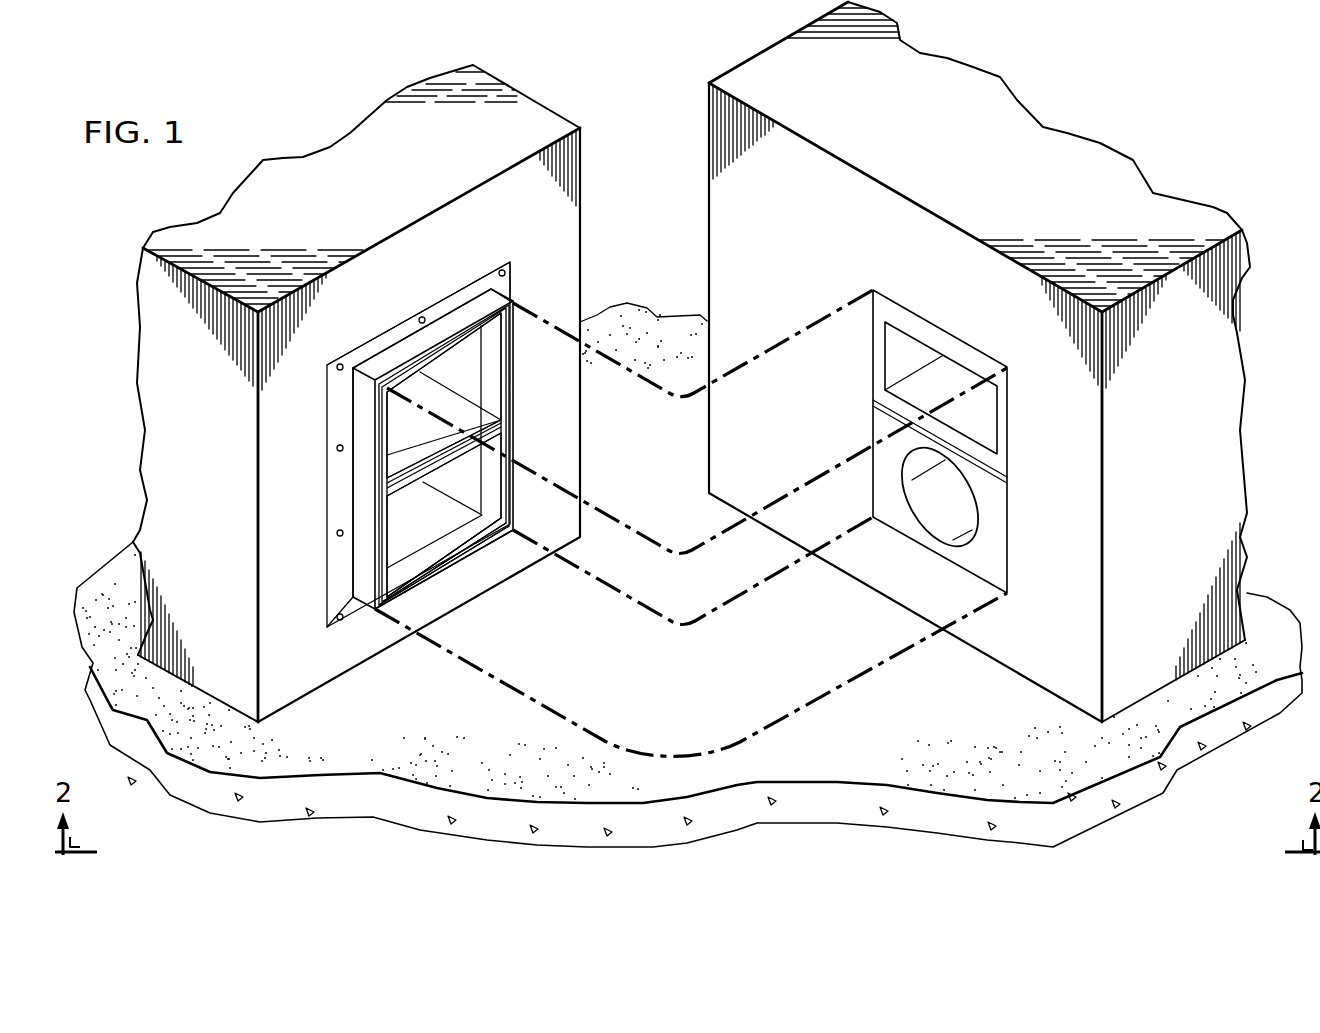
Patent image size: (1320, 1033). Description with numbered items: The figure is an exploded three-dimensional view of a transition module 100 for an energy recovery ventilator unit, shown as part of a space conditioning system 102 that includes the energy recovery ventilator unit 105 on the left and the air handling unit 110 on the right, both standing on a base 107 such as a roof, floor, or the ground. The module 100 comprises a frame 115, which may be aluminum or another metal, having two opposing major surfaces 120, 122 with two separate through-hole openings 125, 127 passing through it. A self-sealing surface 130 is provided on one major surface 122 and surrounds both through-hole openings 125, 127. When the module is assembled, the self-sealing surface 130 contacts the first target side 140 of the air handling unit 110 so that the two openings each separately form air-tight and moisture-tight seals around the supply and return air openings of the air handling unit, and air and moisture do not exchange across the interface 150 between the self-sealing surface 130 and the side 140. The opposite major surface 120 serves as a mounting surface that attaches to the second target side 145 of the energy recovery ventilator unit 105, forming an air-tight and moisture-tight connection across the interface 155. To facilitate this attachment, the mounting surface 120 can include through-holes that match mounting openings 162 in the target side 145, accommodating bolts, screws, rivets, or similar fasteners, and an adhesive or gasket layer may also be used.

The transition module 100 is at (380, 420).
The space conditioning system 102 is at (1160, 95).
The energy recovery ventilator unit 105 is at (356, 393).
The base 107 is at (103, 577).
The air handling unit 110 is at (979, 365).
The frame 115 is at (363, 408).
The major surface 120 is at (360, 414).
The major surface 122 is at (427, 583).
The through-hole opening 125 is at (464, 376).
The through-hole opening 127 is at (427, 525).
The self-sealing surface 130 is at (453, 350).
The side 140 is at (1067, 632).
The side 145 is at (298, 617).
The interface 150 is at (855, 410).
The interface 155 is at (492, 256).
The mounting openings 162 is at (338, 448).